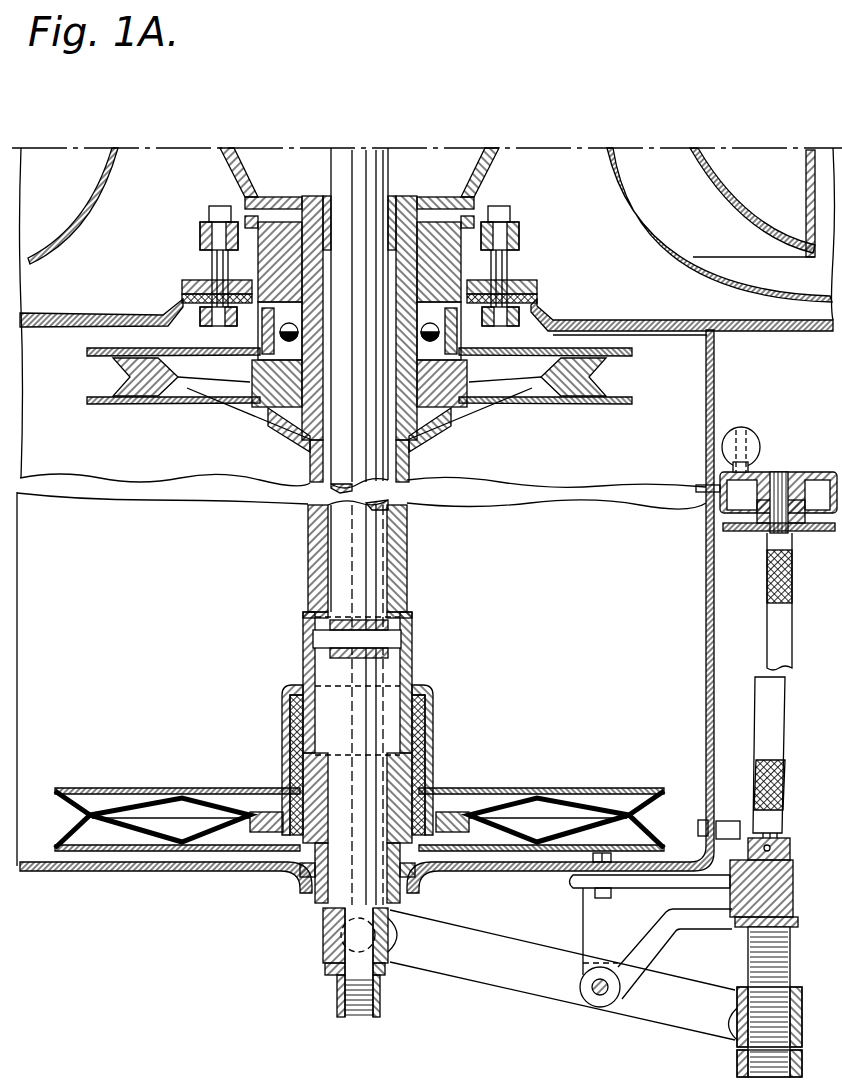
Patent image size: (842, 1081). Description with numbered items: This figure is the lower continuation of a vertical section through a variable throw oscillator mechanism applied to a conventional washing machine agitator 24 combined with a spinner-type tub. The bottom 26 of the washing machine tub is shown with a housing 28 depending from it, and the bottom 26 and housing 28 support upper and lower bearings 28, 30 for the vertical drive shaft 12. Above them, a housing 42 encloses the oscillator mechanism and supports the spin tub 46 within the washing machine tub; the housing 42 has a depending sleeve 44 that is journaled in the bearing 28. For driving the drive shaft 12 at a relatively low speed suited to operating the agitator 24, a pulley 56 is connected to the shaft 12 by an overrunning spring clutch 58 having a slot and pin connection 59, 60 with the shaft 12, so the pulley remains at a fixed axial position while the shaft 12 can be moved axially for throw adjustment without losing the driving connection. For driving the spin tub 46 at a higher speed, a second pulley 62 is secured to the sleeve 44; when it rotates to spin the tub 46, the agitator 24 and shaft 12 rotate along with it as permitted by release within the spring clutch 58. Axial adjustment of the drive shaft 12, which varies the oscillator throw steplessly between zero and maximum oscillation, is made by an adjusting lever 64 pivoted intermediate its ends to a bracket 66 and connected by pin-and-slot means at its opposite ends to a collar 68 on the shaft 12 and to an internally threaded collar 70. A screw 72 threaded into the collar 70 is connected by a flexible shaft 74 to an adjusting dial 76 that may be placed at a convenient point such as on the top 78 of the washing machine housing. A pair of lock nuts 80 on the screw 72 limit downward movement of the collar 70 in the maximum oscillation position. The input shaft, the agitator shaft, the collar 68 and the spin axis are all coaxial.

The drive shaft 12 is at (376, 458).
The washing machine agitator 24 is at (731, 177).
The bottom of washing machine tub 26 is at (579, 323).
The housing and upper bearing 28 is at (432, 334).
The lower bearing 30 is at (315, 906).
The housing 42 is at (487, 175).
The depending sleeve 44 is at (505, 264).
The spin tub 46 is at (623, 190).
The pulley 56 is at (164, 800).
The overrunning spring clutch 58 is at (432, 727).
The slot of slot and pin connection 59 is at (410, 660).
The pin of slot and pin connection 60 is at (400, 636).
The second pulley 62 is at (545, 402).
The adjusting lever 64 is at (494, 947).
The bracket 66 is at (655, 927).
The collar 68 is at (325, 953).
The internally threaded collar 70 is at (802, 1000).
The screw 72 is at (796, 940).
The flexible shaft 74 is at (783, 645).
The adjusting dial 76 is at (800, 474).
The top of washing machine housing 78 is at (752, 533).
The lock nuts 80 is at (735, 1075).